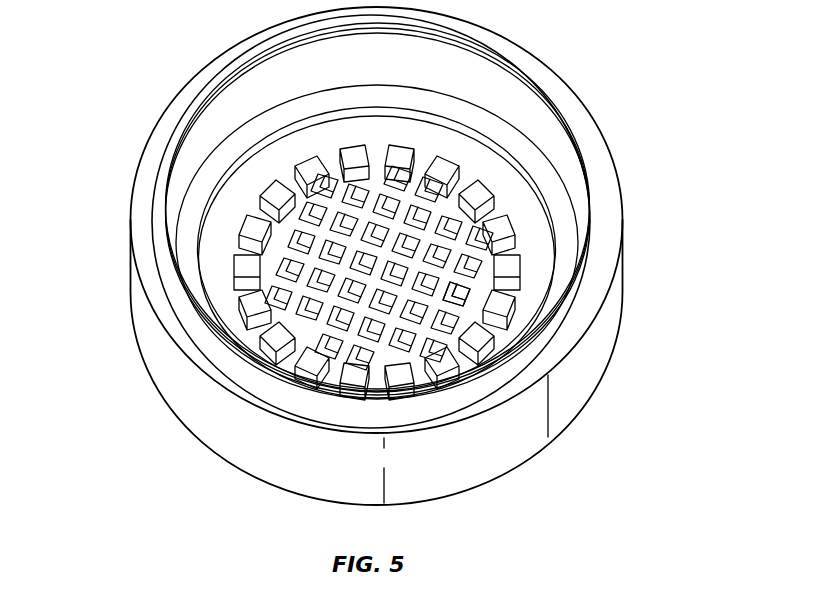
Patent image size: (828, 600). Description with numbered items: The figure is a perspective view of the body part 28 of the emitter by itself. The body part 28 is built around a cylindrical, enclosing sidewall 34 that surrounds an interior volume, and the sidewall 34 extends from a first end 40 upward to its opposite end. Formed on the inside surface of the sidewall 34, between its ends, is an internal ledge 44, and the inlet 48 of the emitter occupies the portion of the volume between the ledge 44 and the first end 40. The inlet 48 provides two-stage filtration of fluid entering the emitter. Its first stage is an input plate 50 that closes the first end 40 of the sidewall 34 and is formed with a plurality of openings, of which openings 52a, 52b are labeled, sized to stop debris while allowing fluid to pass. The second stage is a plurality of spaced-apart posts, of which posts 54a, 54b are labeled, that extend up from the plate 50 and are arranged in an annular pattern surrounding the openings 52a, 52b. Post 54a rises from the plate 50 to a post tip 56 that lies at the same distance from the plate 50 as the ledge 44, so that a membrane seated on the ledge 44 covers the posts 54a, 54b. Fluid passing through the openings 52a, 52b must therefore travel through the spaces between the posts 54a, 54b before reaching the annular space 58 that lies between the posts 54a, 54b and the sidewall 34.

The body part 28 is at (216, 44).
The sidewall 34 is at (558, 398).
The first end 40 is at (152, 400).
The internal ledge 44 is at (548, 187).
The inlet 48 is at (527, 313).
The input plate 50 is at (273, 160).
The opening 52a is at (470, 292).
The opening 52b is at (481, 262).
The post 54a is at (248, 238).
The post 54b is at (234, 268).
The post tip 56 is at (262, 214).
The annular space 58 is at (236, 322).